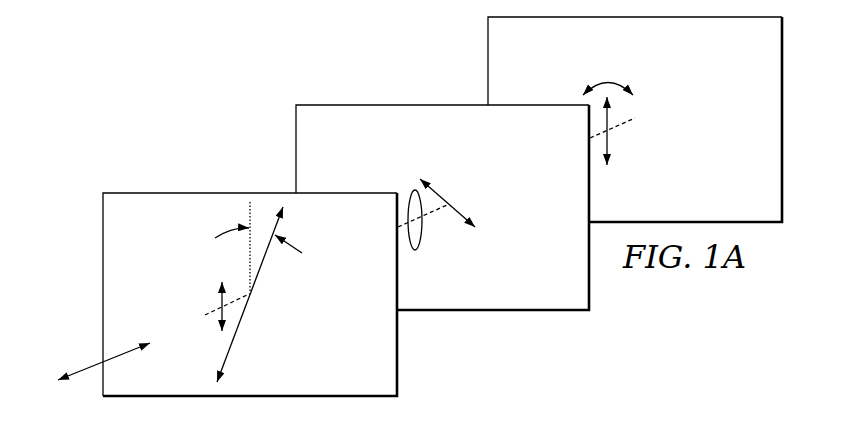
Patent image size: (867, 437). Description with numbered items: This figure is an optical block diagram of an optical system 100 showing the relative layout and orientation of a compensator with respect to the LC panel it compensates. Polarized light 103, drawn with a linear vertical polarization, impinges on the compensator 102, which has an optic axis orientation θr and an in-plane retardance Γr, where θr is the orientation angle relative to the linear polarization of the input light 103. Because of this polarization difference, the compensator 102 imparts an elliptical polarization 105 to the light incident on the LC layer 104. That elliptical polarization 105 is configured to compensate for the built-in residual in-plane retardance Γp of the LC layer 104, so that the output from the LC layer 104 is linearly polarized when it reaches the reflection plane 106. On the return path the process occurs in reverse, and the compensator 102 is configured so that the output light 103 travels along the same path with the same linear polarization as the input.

The optical system 100 is at (168, 105).
The compensator 102 is at (103, 295).
The polarized light 103 is at (82, 370).
The LC layer 104 is at (296, 148).
The elliptical polarization 105 is at (422, 236).
The reflection plane 106 is at (488, 60).